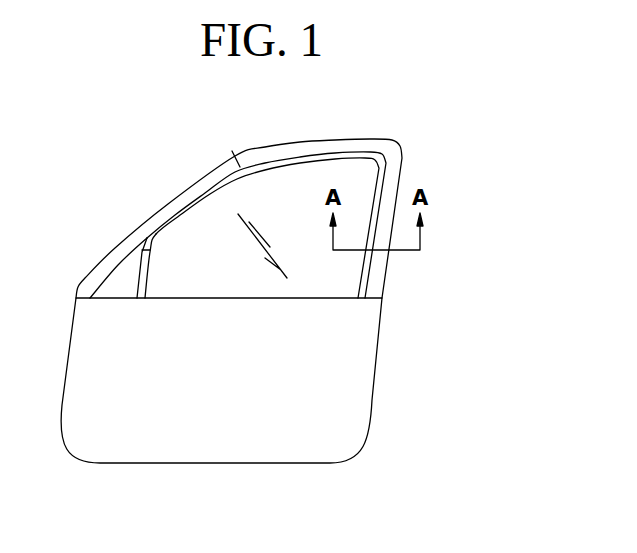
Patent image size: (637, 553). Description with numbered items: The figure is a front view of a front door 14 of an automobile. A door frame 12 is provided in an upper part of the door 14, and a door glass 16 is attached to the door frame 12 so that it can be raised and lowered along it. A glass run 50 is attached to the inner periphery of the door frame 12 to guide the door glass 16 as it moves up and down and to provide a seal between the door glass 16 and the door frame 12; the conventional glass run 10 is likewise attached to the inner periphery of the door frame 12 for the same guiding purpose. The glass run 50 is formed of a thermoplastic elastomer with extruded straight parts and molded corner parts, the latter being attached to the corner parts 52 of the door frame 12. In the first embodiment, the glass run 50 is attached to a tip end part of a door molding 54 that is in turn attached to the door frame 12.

The glass run 10 is at (287, 201).
The door frame 12 is at (184, 190).
The door 14 is at (345, 385).
The door glass 16 is at (337, 277).
The glass run 50 is at (352, 153).
The corner parts 52 is at (142, 234).
The door molding 54 is at (231, 152).